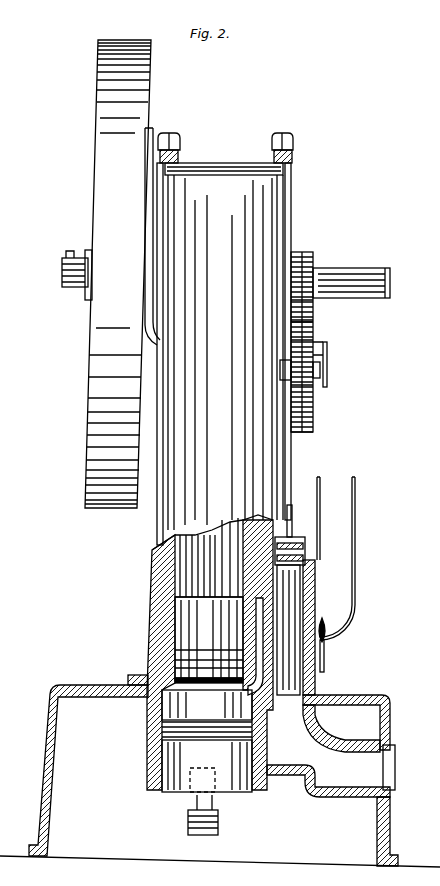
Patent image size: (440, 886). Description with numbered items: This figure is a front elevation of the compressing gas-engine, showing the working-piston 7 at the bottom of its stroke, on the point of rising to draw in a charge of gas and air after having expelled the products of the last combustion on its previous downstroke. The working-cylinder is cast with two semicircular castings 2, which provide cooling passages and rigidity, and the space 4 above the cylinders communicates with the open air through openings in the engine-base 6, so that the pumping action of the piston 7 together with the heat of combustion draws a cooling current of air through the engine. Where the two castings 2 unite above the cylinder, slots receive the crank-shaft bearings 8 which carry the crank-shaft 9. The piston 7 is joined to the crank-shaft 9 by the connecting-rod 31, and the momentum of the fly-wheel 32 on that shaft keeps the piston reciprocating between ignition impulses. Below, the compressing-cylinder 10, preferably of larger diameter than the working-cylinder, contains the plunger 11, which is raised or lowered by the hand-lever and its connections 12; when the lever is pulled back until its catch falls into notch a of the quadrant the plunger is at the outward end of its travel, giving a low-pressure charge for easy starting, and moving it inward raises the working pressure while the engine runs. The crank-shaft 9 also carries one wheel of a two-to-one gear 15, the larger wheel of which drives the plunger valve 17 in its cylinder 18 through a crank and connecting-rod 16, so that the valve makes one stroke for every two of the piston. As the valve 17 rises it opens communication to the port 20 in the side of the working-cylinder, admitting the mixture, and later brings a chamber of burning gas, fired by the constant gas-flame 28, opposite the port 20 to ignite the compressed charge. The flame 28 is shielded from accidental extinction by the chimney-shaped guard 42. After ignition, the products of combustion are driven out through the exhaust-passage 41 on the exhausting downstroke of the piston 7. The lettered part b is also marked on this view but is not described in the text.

The semicircular casting 2 is at (222, 341).
The space over the cylinders 4 is at (223, 590).
The engine-base 6 is at (213, 693).
The working-piston 7 is at (209, 640).
The crank-shaft bearings 8 is at (297, 252).
The crank-shaft 9 is at (357, 283).
The compressing-cylinder 10 is at (207, 713).
The plunger 11 is at (207, 766).
The hand-lever and its connections 12 is at (203, 815).
The two-to-one gear 15 is at (312, 330).
The crank and connecting-rod 16 is at (311, 453).
The piston or plunger valve 17 is at (288, 630).
The valve cylinder 18 is at (315, 688).
The port 20 is at (258, 600).
The constant gas-flame 28 is at (326, 630).
The connecting-rod 31 is at (197, 566).
The fly-wheel 32 is at (118, 274).
The exhaust-passage 41 is at (336, 728).
The chimney-shaped guard 42 is at (336, 558).
The notch in the quadrant a is at (307, 308).
The gear b is at (305, 408).